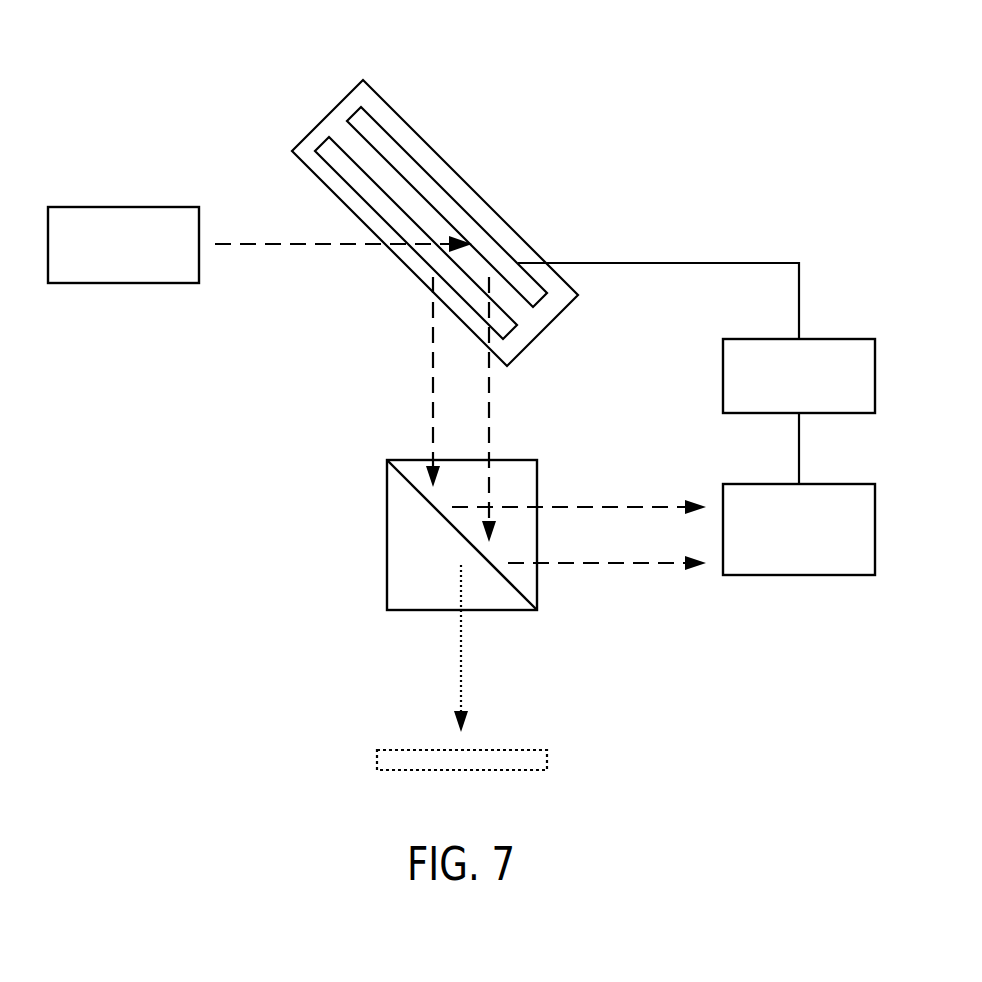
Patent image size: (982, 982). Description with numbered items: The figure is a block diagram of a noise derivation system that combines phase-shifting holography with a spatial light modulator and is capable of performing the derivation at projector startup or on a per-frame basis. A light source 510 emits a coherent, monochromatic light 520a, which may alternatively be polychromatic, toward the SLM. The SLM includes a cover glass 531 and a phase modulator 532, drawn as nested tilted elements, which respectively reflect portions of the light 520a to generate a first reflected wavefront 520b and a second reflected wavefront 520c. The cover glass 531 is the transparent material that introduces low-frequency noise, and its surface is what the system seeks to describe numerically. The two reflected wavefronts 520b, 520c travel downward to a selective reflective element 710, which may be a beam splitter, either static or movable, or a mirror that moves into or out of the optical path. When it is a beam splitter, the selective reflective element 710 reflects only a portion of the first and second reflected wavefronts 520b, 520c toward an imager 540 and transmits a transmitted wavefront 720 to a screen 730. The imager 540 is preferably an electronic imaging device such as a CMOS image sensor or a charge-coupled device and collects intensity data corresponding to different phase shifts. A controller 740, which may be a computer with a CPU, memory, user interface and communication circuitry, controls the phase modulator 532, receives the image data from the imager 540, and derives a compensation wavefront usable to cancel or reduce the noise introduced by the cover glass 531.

The light source 510 is at (122, 207).
The light 520a is at (263, 246).
The first reflected wavefront 520b is at (433, 432).
The second reflected wavefront 520c is at (490, 393).
The cover glass 531 is at (311, 132).
The phase modulator 532 is at (350, 114).
The imager 540 is at (847, 577).
The selective reflective element 710 is at (387, 527).
The transmitted wavefront 720 is at (460, 670).
The screen 730 is at (377, 764).
The controller 740 is at (847, 339).